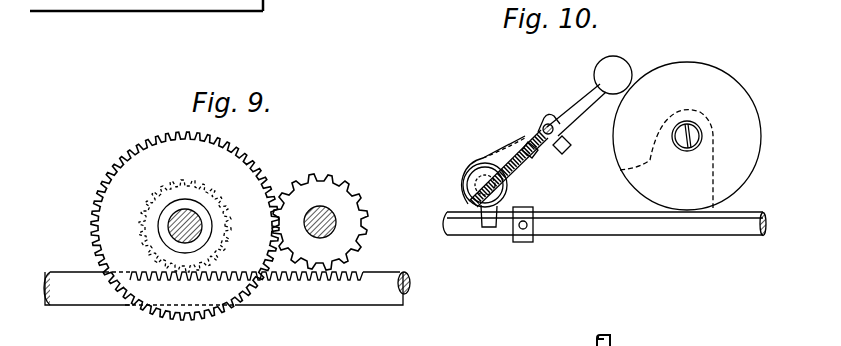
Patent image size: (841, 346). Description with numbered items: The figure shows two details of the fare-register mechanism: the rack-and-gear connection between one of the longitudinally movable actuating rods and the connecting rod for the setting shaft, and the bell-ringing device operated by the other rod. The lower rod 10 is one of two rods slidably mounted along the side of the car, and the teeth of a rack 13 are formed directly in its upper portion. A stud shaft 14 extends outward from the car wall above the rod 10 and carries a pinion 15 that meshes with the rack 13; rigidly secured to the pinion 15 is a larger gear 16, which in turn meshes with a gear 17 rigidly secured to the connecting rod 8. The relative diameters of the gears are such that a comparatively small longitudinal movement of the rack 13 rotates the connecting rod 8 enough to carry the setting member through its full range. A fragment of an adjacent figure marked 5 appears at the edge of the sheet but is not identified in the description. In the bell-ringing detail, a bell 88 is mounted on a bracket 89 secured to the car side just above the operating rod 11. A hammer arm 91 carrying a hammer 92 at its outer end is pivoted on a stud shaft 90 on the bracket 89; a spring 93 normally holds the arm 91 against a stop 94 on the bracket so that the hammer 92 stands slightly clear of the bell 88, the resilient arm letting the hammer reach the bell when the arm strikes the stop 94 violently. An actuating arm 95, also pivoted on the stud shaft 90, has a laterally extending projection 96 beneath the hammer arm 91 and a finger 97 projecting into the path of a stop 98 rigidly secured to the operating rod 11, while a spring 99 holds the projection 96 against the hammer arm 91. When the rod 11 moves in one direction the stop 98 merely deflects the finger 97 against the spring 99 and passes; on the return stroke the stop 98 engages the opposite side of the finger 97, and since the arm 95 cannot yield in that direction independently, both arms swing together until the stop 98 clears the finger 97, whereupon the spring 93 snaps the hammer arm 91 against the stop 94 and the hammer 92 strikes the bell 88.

In FIG. 9, the fragment of adjacent figure 5 is at (175, 0).
In FIG. 9, the connecting rod 8 is at (332, 211).
In FIG. 9, the actuating member 10 is at (408, 292).
In FIG. 10, the operating rod 11 is at (710, 228).
In FIG. 9, the rack 13 is at (281, 272).
In FIG. 9, the stud shaft 14 is at (197, 216).
In FIG. 9, the pinion 15 is at (160, 193).
In FIG. 9, the gear 16 is at (229, 156).
In FIG. 9, the gear 17 is at (364, 219).
In FIG. 10, the bell 88 is at (706, 71).
In FIG. 10, the bracket 89 is at (637, 198).
In FIG. 10, the stud shaft 90 is at (480, 177).
In FIG. 10, the hammer arm 91 is at (527, 142).
In FIG. 10, the hammer 92 is at (619, 60).
In FIG. 10, the spring 93 is at (531, 168).
In FIG. 10, the stop 94 is at (572, 140).
In FIG. 10, the actuating arm 95 is at (500, 148).
In FIG. 10, the projection 96 is at (540, 168).
In FIG. 10, the finger 97 is at (470, 200).
In FIG. 10, the stop 98 is at (520, 242).
In FIG. 10, the spring 99 is at (541, 123).